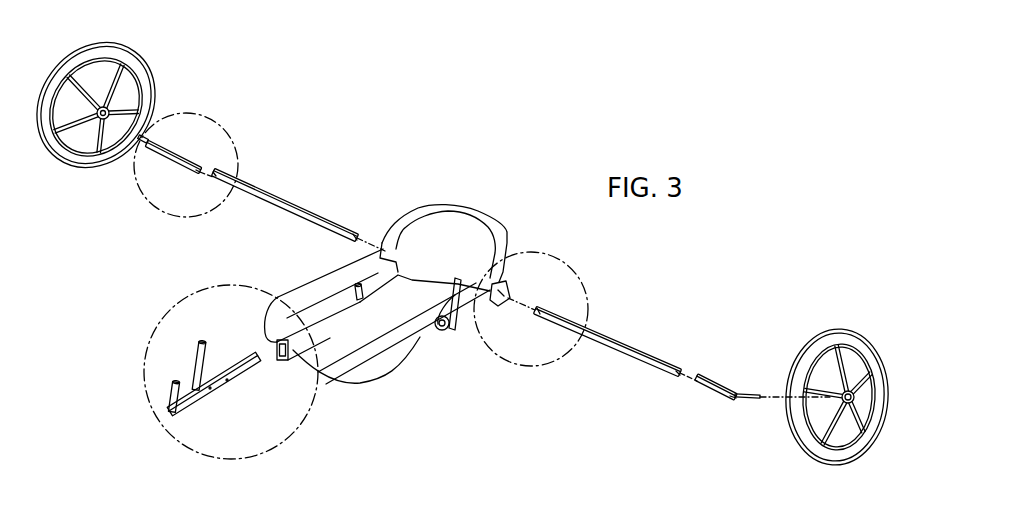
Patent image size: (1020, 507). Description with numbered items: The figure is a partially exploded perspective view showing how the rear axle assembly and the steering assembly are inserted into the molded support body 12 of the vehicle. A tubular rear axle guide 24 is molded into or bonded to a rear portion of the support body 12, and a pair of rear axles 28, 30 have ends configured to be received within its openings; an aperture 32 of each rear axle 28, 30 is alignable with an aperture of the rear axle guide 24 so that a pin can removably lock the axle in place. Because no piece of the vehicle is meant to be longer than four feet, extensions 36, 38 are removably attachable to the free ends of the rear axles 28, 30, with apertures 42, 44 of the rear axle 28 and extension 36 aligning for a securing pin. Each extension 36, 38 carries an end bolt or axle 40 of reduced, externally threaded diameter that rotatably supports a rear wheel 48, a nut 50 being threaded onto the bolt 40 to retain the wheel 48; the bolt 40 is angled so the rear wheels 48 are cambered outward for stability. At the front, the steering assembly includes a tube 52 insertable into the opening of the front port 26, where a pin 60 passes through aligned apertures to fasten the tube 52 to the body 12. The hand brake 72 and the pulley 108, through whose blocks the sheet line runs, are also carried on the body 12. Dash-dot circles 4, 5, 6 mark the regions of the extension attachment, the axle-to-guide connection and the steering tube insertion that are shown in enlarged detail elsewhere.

The detail view circle (FIG. 4) 4 is at (186, 163).
The detail view circle (FIG. 5) 5 is at (565, 347).
The detail view circle (FIG. 6) 6 is at (231, 376).
The molded support body 12 is at (400, 203).
The rear axle guide 24 is at (550, 273).
The port 26 is at (316, 383).
The rear axle 28 is at (292, 204).
The rear axle 30 is at (669, 347).
The aperture 32 is at (442, 310).
The extension 36 is at (218, 140).
The extension 38 is at (731, 367).
The axle 40 is at (415, 301).
The aperture 42 is at (410, 297).
The aperture 44 is at (414, 303).
The rear wheel 48 is at (453, 260).
The nut 50 is at (817, 340).
The tube 52 is at (230, 389).
The pin 60 is at (148, 386).
The hand brake 72 is at (472, 339).
The pulley 108 is at (403, 348).